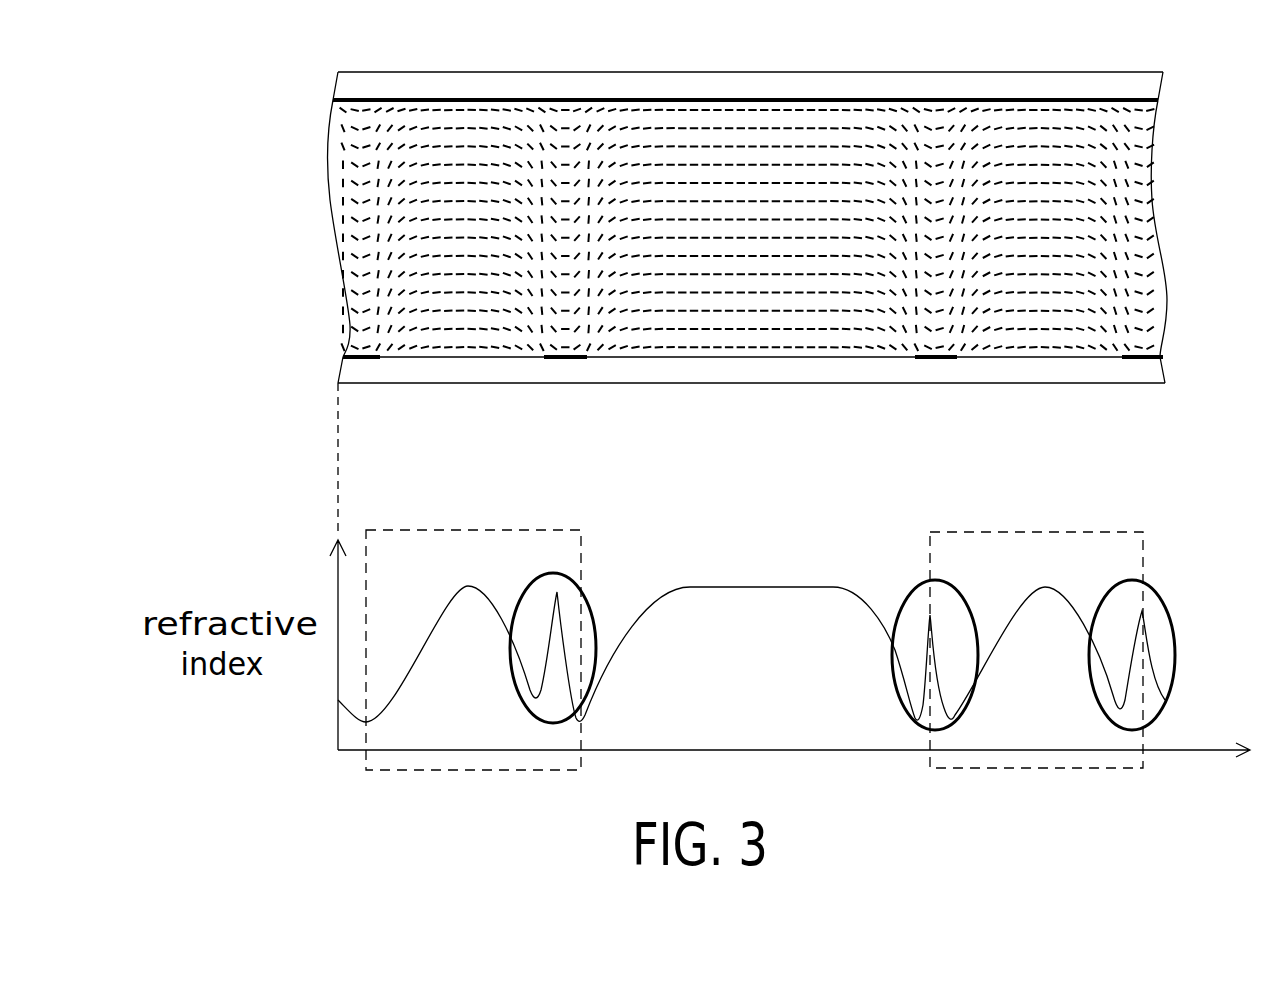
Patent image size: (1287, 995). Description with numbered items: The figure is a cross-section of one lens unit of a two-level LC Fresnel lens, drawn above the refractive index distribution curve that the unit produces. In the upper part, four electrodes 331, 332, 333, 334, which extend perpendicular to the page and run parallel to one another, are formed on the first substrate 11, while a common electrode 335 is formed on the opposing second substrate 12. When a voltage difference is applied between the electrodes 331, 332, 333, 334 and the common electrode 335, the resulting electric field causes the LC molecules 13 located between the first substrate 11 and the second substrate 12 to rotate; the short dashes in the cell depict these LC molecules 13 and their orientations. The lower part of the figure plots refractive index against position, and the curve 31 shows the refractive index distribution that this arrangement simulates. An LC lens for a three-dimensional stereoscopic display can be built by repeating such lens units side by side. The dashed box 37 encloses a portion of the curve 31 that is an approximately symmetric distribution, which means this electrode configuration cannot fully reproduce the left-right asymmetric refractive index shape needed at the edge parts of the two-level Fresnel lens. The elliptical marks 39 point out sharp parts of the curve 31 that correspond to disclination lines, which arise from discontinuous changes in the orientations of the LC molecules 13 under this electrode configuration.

The first substrate 11 is at (352, 368).
The second substrate 12 is at (338, 95).
The LC molecules 13 is at (706, 348).
The curve 31 is at (763, 585).
The box 37 is at (455, 770).
The elliptical marks 39 is at (550, 573).
The electrode 331 is at (365, 359).
The electrode 332 is at (565, 359).
The electrode 333 is at (935, 359).
The electrode 334 is at (1143, 359).
The common electrode 335 is at (395, 102).